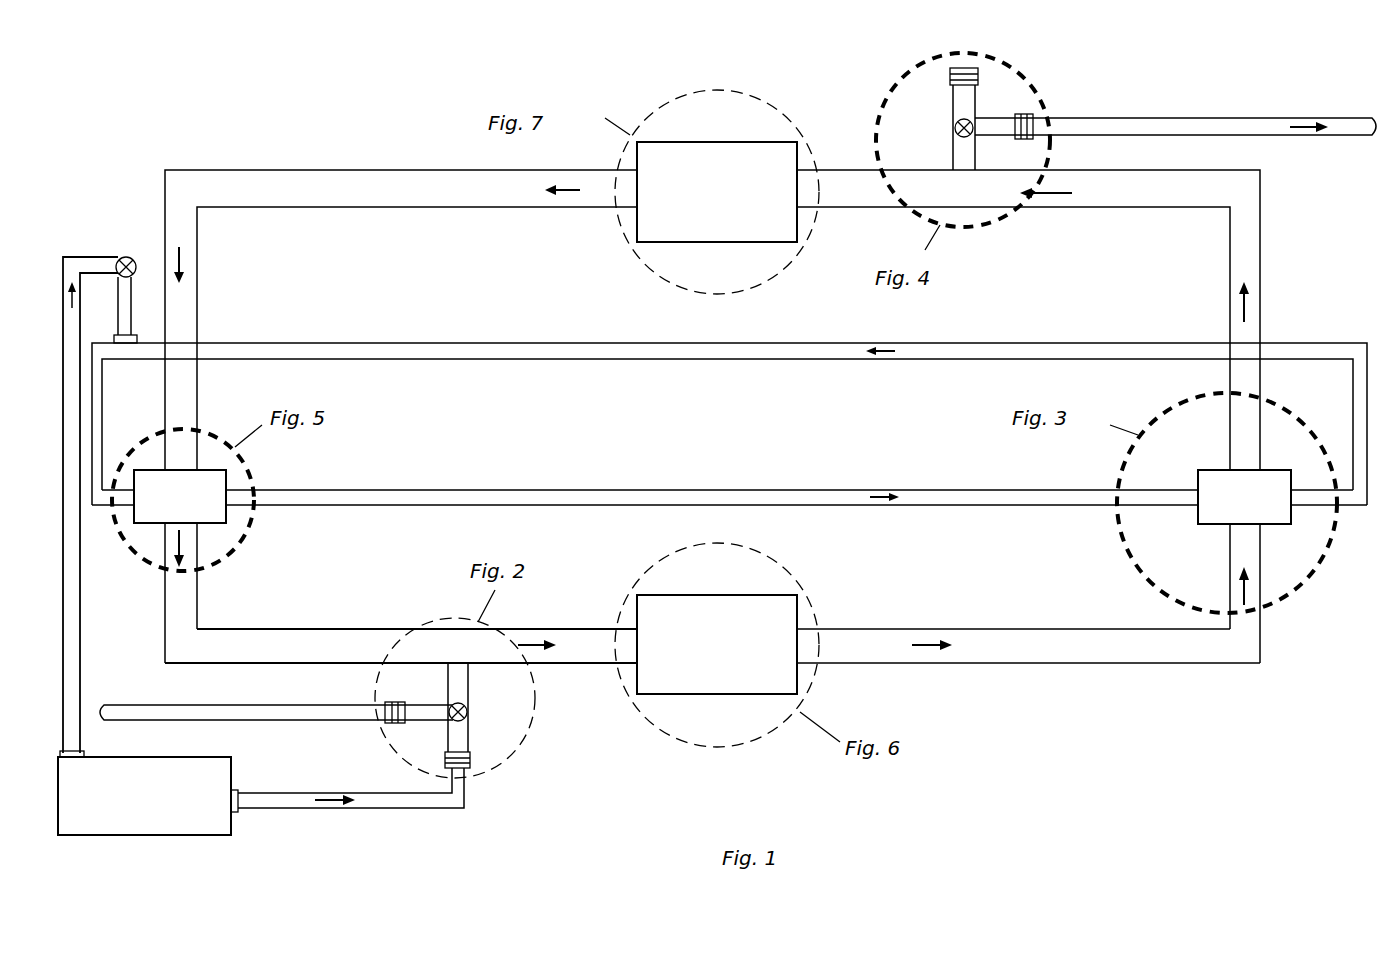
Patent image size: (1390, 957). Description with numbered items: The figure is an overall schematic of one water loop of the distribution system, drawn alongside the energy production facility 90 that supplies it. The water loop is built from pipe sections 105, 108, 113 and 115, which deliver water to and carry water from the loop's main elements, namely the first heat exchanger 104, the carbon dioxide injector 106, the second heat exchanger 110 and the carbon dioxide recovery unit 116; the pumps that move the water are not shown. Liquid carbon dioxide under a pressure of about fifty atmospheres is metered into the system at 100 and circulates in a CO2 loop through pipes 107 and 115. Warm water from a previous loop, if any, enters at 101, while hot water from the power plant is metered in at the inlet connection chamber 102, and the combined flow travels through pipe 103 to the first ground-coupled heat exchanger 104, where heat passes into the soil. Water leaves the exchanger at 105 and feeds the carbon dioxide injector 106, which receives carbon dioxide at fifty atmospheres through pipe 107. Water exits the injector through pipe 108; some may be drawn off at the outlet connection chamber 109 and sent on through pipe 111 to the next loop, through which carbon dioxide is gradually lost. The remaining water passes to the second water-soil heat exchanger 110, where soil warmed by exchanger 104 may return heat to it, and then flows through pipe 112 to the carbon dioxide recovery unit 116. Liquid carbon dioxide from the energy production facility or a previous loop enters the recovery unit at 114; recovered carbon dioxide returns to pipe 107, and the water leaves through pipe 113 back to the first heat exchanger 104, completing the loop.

The energy production facility 90 is at (236, 765).
The carbon dioxide metering point 100 is at (140, 236).
The warm water input 101 is at (185, 703).
The inlet connection chamber 102 is at (468, 712).
The pipe 103 is at (563, 665).
The first heat exchanger 104 is at (680, 695).
The pipe section 105 is at (876, 630).
The carbon dioxide injector 106 is at (1198, 525).
The carbon dioxide pipe 107 is at (943, 488).
The pipe section 108 is at (1038, 210).
The outlet connection chamber 109 is at (955, 132).
The second heat exchanger 110 is at (715, 243).
The water outlet pipe 111 is at (1200, 117).
The pipe 112 is at (530, 208).
The pipe section 113 is at (293, 628).
The carbon dioxide inlet of recovery unit 114 is at (148, 593).
The pipe section 115 is at (900, 360).
The carbon dioxide recovery unit 116 is at (228, 517).